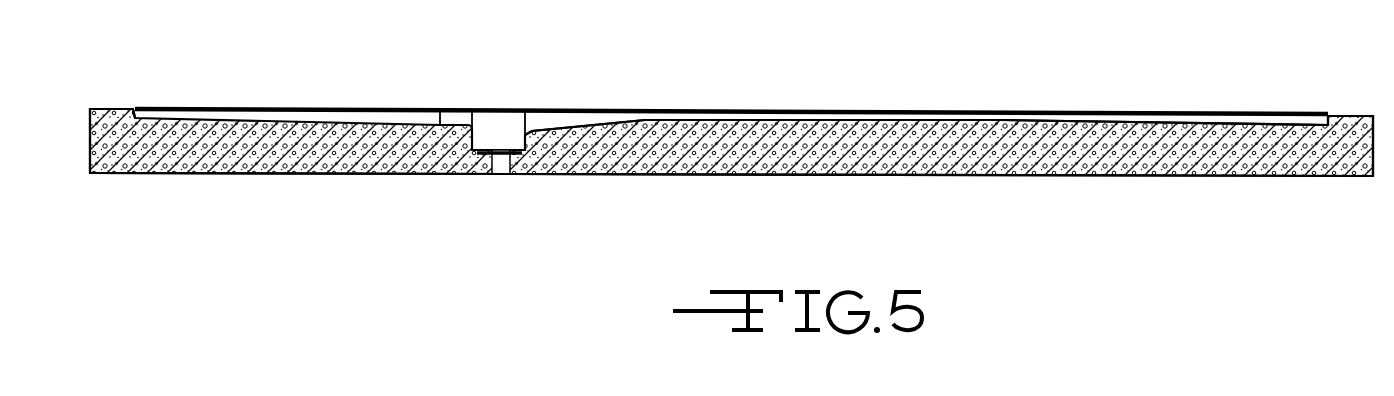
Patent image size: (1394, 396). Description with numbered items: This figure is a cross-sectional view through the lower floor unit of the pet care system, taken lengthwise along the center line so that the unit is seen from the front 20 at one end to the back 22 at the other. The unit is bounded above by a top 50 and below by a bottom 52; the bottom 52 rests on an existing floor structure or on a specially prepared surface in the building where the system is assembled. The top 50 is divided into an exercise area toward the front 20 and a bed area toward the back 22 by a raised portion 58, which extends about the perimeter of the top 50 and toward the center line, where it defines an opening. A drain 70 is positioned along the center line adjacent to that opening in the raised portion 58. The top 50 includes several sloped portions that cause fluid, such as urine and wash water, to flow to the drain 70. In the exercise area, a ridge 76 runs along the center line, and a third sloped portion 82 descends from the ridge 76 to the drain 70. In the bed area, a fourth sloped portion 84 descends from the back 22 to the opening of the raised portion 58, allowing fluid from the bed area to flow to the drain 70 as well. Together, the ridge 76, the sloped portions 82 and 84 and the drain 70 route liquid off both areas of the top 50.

The front 20 is at (1360, 114).
The back 22 is at (97, 108).
The top 50 is at (1072, 120).
The bottom 52 is at (1068, 177).
The raised portion 58 is at (450, 107).
The drain 70 is at (497, 150).
The ridge 76 is at (787, 121).
The third sloped portion 82 is at (582, 127).
The fourth sloped portion 84 is at (232, 108).